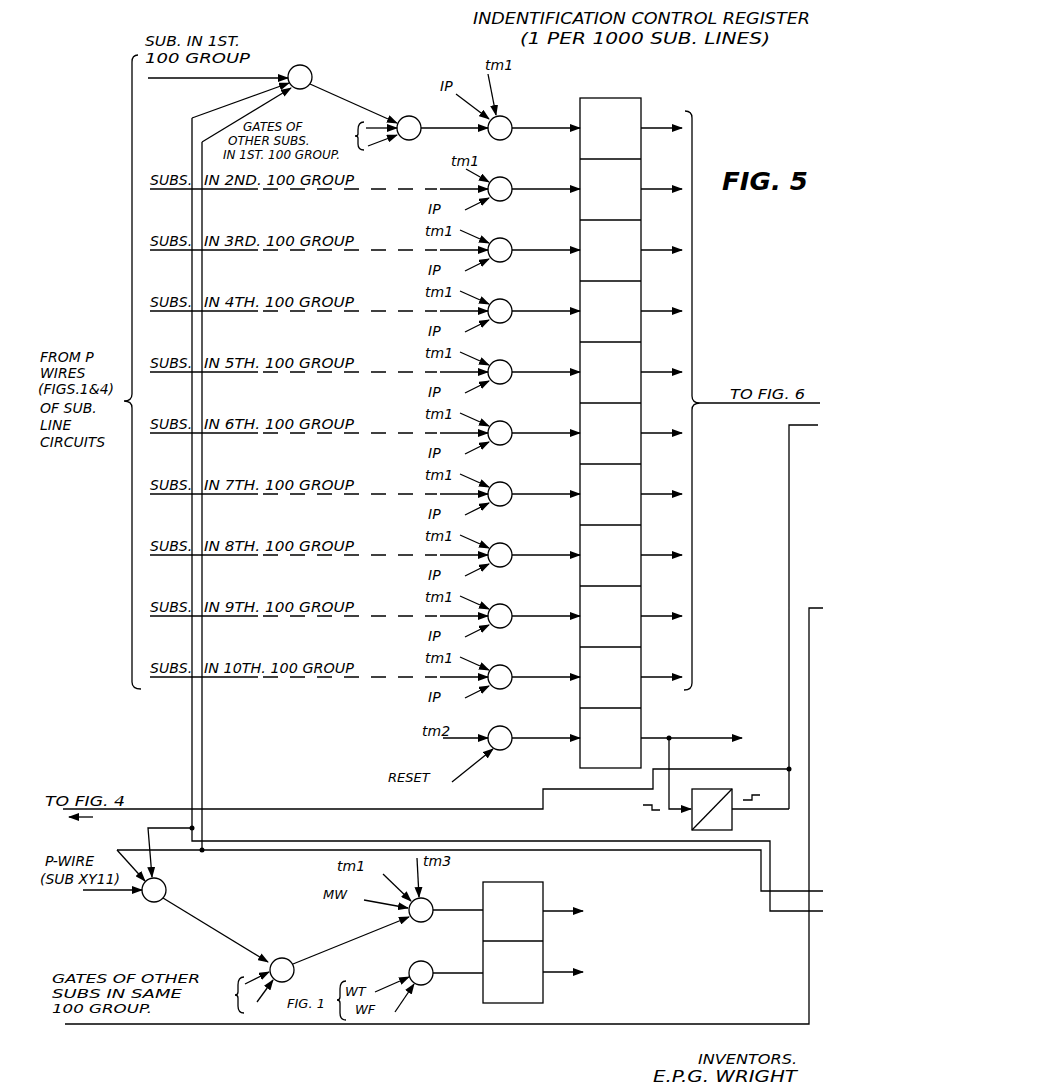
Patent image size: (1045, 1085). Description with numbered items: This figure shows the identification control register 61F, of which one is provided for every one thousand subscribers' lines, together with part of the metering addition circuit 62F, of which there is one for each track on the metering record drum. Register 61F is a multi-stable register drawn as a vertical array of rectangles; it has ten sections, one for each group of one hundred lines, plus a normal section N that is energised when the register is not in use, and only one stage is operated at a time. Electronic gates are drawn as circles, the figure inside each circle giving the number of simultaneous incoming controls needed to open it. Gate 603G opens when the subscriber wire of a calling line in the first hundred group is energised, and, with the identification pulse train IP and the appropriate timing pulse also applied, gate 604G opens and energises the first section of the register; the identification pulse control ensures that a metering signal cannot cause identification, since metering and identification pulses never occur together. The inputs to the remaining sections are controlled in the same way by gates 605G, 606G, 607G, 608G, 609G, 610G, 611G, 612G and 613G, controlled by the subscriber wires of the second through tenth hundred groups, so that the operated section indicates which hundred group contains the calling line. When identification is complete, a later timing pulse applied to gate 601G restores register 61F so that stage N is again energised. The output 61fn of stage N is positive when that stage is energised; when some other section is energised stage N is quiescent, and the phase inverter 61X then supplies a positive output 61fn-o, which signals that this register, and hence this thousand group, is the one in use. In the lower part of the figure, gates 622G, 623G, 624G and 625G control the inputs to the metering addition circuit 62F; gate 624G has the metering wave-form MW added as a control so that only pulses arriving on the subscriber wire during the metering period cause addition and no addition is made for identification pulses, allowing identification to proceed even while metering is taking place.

The gate 603G is at (356, 102).
The gate 604G is at (534, 125).
The gate for 2nd 100 group 605G is at (534, 186).
The gate for 3rd 100 group 606G is at (534, 247).
The gate for 4th 100 group 607G is at (534, 308).
The gate for 5th 100 group 608G is at (534, 369).
The gate for 6th 100 group 609G is at (534, 430).
The gate for 7th 100 group 610G is at (534, 491).
The gate for 8th 100 group 611G is at (534, 552).
The gate for 9th 100 group 612G is at (534, 613).
The gate for 10th 100 group 613G is at (534, 674).
The gate 601G is at (534, 737).
The identification control register 61F is at (631, 421).
The normal stage output 61fn is at (691, 730).
The phase inverter 61X is at (712, 801).
The inverted output 61fn-o is at (716, 813).
The P-wire gate 622G is at (176, 888).
The gate for other subs in same 100 group 623G is at (280, 960).
The gate 624G is at (446, 907).
The gate WT/WF 625G is at (446, 969).
The metering addition circuit register 62F is at (533, 933).